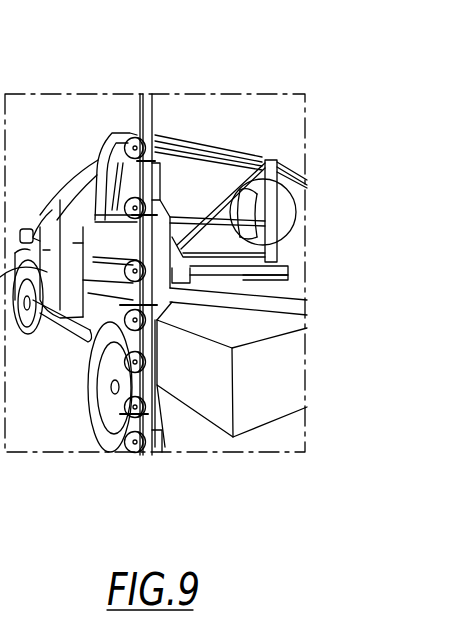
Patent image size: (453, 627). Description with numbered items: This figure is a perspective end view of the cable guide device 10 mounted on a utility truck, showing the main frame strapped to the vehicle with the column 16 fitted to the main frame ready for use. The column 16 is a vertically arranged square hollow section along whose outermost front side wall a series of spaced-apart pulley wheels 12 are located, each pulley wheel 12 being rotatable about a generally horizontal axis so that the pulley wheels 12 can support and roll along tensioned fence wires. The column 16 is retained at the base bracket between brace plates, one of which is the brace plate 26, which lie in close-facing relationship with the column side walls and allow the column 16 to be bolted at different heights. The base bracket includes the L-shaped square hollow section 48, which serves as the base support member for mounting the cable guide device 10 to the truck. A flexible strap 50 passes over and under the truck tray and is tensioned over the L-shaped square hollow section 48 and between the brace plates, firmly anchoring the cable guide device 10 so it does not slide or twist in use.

The cable guide device 10 is at (107, 465).
The pulley wheels 12 is at (127, 131).
The column 16 is at (150, 427).
The brace plate 26 is at (160, 237).
The L-shaped square hollow section 48 is at (275, 251).
The flexible strap 50 is at (302, 204).